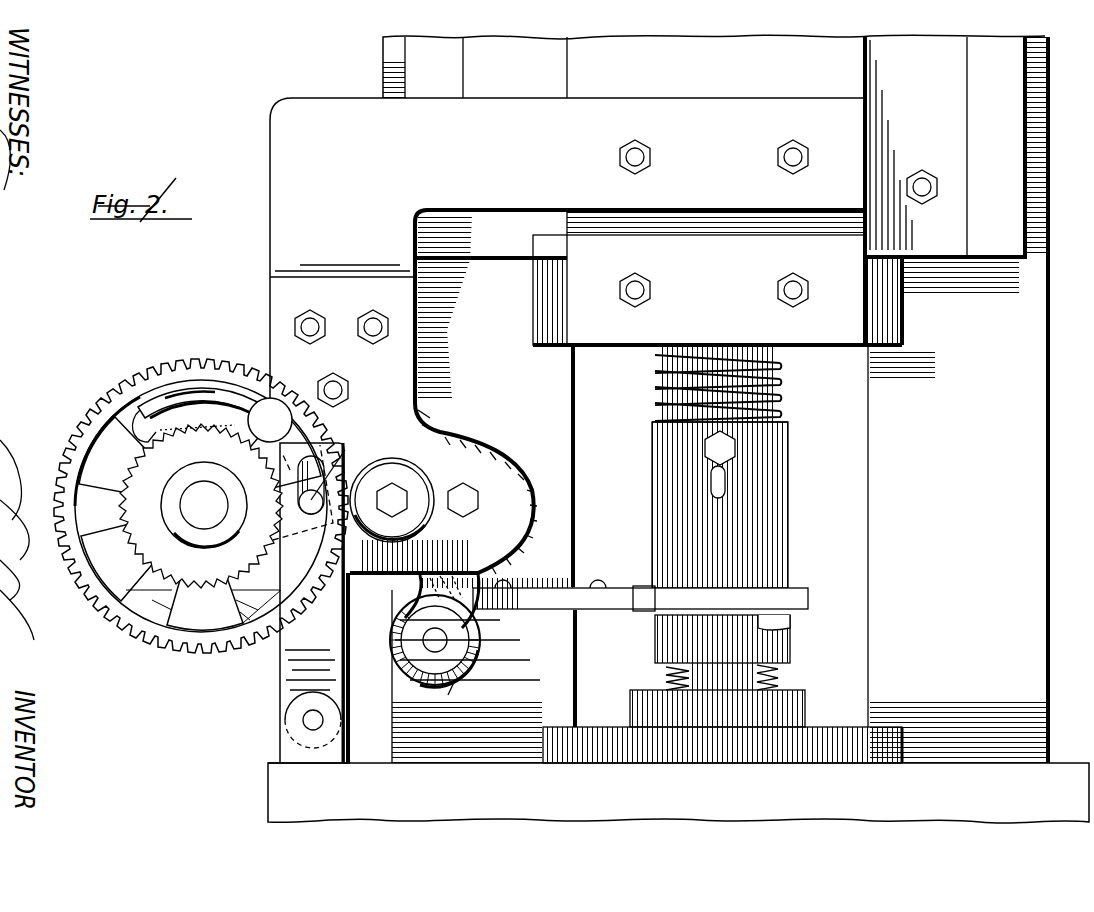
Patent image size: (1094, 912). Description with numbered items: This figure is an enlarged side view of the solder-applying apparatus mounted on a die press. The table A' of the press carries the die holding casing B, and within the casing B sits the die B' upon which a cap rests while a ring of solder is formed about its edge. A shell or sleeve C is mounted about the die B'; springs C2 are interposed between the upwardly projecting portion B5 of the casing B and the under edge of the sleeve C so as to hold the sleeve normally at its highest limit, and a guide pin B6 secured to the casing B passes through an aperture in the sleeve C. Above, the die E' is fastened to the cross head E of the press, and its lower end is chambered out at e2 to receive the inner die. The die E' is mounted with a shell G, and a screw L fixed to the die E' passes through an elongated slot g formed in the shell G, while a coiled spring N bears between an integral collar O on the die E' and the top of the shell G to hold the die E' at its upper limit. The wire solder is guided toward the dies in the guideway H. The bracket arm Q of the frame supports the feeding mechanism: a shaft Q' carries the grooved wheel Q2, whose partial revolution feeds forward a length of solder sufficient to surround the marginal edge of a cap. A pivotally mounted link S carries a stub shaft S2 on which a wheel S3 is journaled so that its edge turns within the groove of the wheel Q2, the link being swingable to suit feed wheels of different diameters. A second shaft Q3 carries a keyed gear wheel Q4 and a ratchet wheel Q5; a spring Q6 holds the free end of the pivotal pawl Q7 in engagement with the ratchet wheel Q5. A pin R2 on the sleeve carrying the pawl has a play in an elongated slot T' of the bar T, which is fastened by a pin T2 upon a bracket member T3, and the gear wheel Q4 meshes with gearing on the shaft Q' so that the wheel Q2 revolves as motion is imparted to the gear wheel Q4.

The cross head E is at (714, 146).
The die E' is at (735, 272).
The guideway H is at (590, 604).
The bracket arm Q is at (547, 430).
The shaft Q' is at (406, 500).
The groove wheel Q2 is at (440, 420).
The shaft Q3 is at (195, 510).
The gear wheel Q4 is at (170, 645).
The ratchet wheel Q5 is at (201, 506).
The spring Q6 is at (148, 424).
The pivotal pawl Q7 is at (162, 416).
The pin R2 is at (322, 470).
The bar T is at (312, 603).
The elongated slot T' is at (297, 482).
The pin T2 is at (304, 722).
The bracket member T3 is at (290, 758).
The link S is at (488, 612).
The stub shaft S2 is at (430, 642).
The wheel S3 is at (468, 698).
The shell or sleeve C is at (800, 598).
The shell G is at (668, 522).
The elongated slot g is at (727, 482).
The screw L is at (706, 448).
The integral collar O is at (785, 360).
The coiled spring N is at (790, 396).
The chambered lower end e2 is at (790, 625).
The springs C2 is at (780, 676).
The die B' is at (701, 652).
The upwardly projecting portion B5 is at (808, 704).
The guide pin B6 is at (664, 684).
The die holding casing B is at (722, 766).
The table A' is at (678, 793).